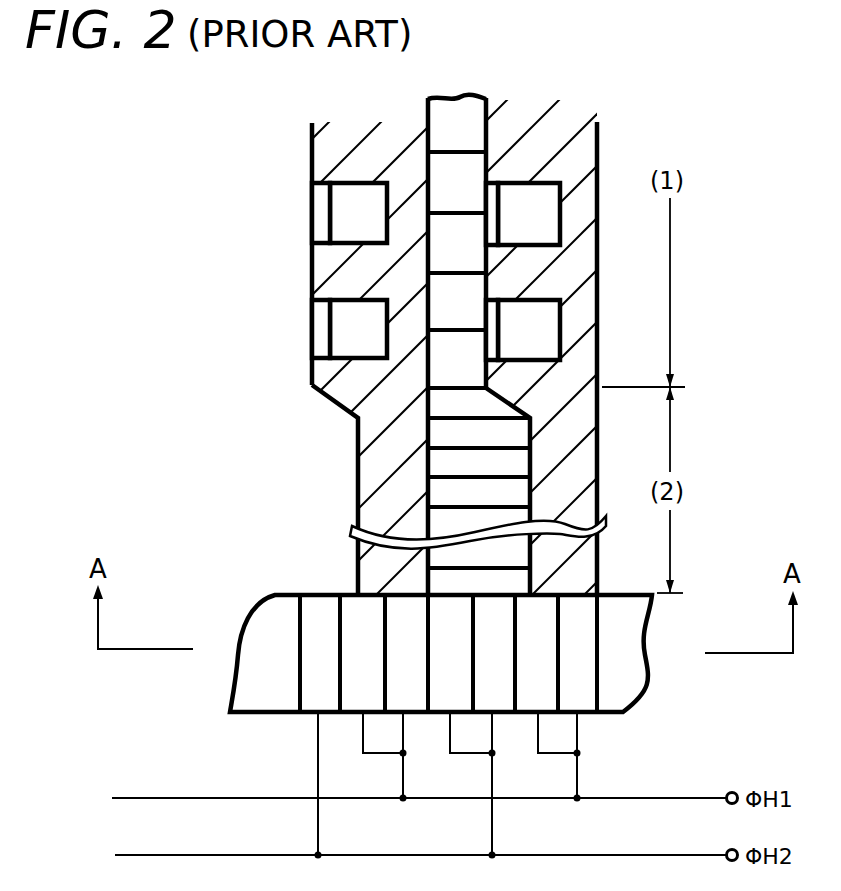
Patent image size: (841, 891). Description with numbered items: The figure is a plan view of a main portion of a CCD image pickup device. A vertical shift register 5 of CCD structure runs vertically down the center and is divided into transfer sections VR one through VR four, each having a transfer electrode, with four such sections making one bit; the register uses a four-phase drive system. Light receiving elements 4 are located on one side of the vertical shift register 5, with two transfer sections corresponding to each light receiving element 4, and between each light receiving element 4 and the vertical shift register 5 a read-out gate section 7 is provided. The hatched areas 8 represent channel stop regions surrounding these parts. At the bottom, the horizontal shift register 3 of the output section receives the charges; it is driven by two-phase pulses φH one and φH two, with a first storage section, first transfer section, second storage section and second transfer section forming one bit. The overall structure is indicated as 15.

The horizontal shift register section 3 is at (631, 665).
The light receiving element 4 is at (366, 184).
The vertical shift register 5 is at (465, 97).
The read-out gate section 7 is at (323, 208).
The channel stop region 8 is at (372, 458).
The solid-state image sensor 15 is at (175, 135).